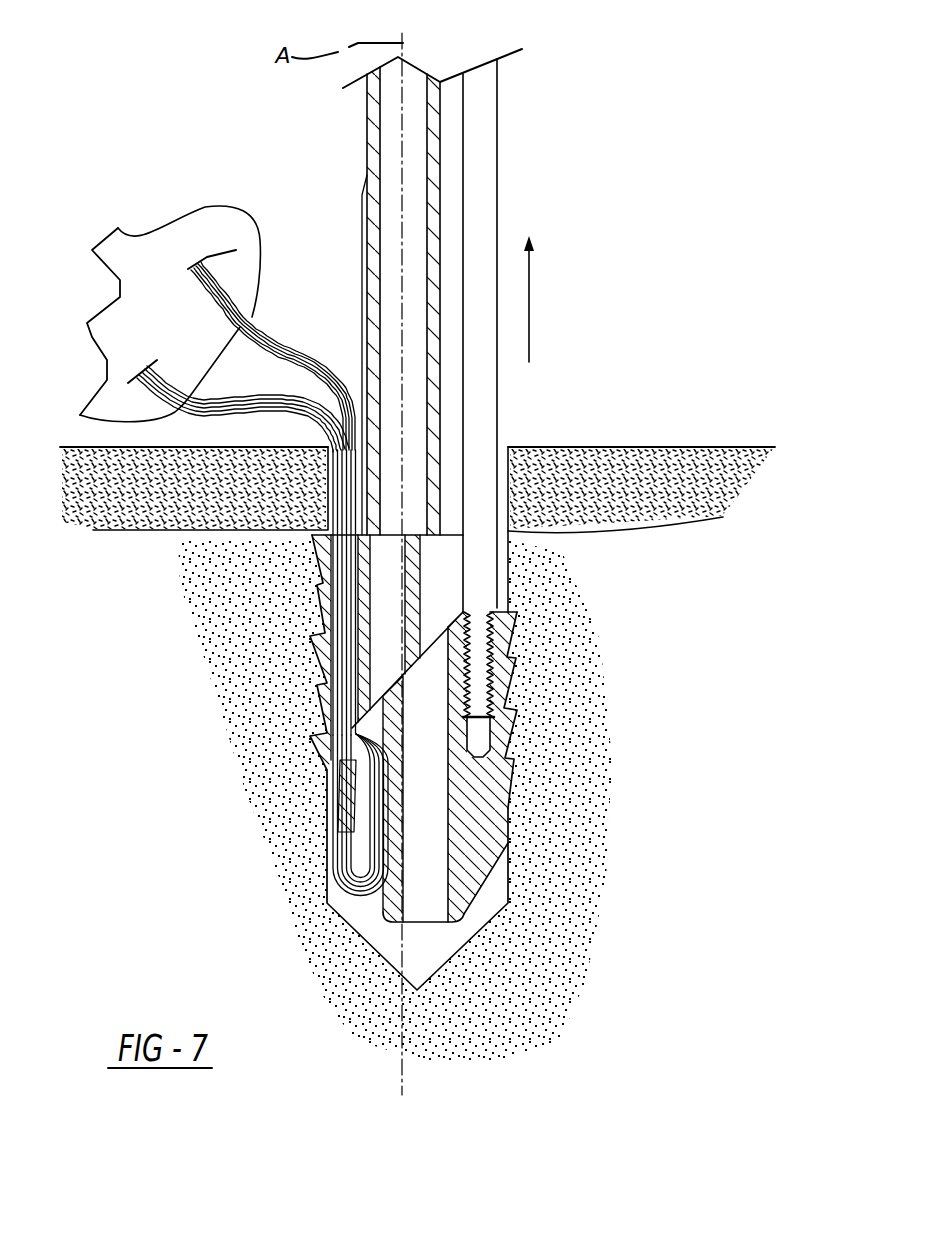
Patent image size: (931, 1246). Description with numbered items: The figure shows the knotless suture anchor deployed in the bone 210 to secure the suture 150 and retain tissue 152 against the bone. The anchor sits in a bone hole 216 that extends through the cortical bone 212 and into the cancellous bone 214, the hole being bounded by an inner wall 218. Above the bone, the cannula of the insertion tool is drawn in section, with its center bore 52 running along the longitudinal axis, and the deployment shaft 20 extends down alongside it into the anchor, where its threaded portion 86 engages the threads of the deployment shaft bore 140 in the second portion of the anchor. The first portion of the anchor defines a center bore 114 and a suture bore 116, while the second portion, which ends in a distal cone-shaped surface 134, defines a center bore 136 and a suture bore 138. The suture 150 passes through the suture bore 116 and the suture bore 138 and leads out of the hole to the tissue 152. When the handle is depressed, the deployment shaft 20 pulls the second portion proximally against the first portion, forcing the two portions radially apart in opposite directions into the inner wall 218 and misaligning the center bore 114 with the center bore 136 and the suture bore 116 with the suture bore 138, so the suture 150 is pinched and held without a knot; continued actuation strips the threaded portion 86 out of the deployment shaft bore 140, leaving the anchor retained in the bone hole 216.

The deployment shaft 20 is at (487, 117).
The center bore 52 is at (421, 66).
The threaded portion 86 is at (478, 668).
The center bore 114 is at (372, 662).
The suture bore 116 is at (332, 690).
The distal cone-shaped surface 134 is at (493, 880).
The center bore 136 is at (448, 894).
The suture bore 138 is at (358, 790).
The deployment shaft bore 140 is at (487, 731).
The suture 150 is at (308, 347).
The tissue 152 is at (188, 221).
The bone 210 is at (636, 448).
The cortical bone 212 is at (685, 483).
The cancellous bone 214 is at (572, 582).
The bone hole 216 is at (504, 473).
The inner wall 218 is at (503, 853).